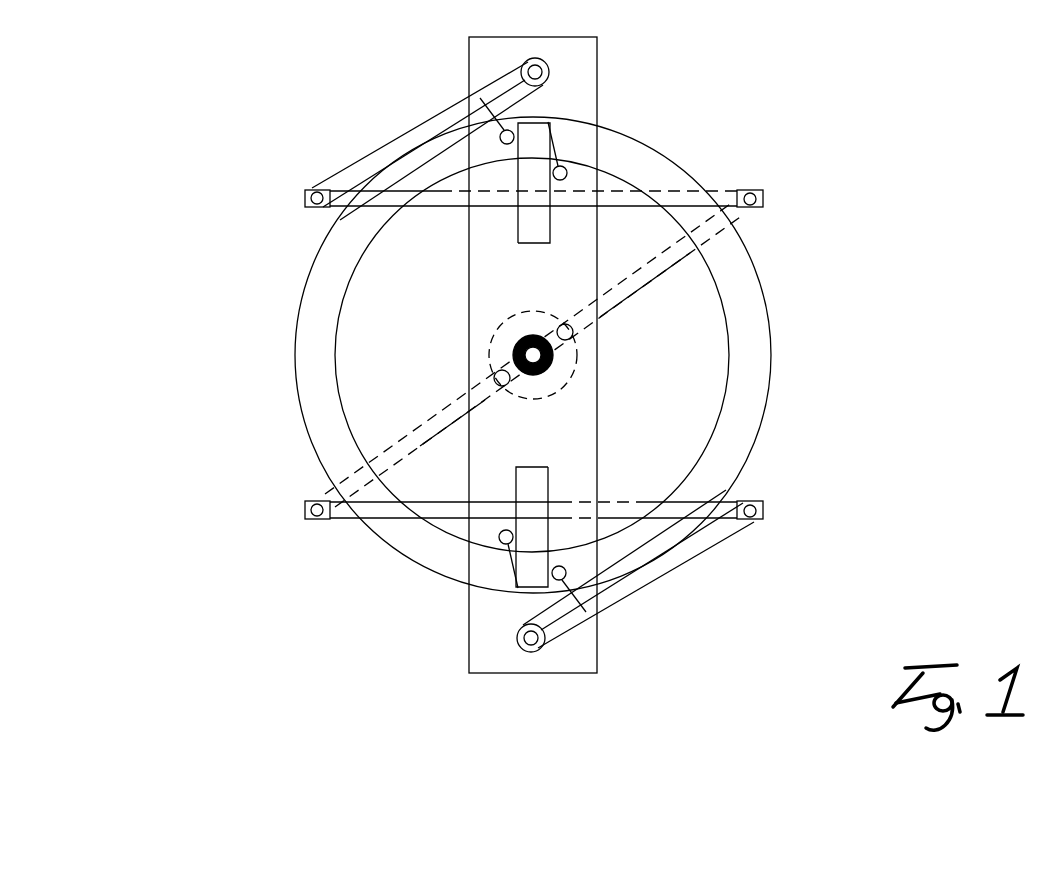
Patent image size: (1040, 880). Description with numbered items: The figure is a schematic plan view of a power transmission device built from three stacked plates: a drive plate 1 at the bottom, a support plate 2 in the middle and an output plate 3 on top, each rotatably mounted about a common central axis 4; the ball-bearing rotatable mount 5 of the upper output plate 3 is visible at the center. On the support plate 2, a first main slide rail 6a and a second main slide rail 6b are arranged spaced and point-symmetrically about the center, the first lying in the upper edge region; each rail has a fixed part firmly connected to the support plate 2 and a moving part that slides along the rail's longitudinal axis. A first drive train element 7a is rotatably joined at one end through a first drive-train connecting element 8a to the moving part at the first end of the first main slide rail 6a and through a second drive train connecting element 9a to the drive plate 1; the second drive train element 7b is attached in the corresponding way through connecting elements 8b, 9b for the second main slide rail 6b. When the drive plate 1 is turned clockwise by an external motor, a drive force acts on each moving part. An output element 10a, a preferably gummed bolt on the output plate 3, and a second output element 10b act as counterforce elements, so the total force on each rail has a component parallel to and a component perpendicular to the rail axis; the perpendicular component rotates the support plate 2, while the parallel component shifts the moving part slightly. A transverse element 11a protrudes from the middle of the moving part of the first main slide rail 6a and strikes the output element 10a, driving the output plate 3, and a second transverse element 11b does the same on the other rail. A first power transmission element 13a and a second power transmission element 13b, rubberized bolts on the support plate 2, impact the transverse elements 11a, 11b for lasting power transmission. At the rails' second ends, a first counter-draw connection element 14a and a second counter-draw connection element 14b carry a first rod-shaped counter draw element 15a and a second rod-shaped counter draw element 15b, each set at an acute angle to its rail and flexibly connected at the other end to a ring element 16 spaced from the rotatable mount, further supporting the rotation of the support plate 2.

The drive plate 1 is at (583, 80).
The support plate 2 is at (763, 287).
The output plate 3 is at (733, 343).
The central axis 4 is at (512, 367).
The rotatable mount 5 is at (512, 342).
The ring element 16 is at (512, 320).
The first main slide rail 6a is at (405, 233).
The second main slide rail 6b is at (470, 580).
The first drive train element 7a is at (425, 122).
The second drive train element 7b is at (613, 590).
The first drive-train connecting element 8a is at (308, 193).
The lower bar right pivot 8b is at (765, 503).
The second drive train connecting element 9a is at (548, 62).
The lower arm pin 9b is at (517, 636).
The output element 10a is at (502, 119).
The second output element 10b is at (490, 586).
The transverse element 11a is at (548, 119).
The second transverse element 11b is at (547, 585).
The first power transmission element 13a is at (485, 122).
The second power transmission element 13b is at (548, 556).
The first counter-draw connection element 14a is at (763, 195).
The second counter-draw connection element 14b is at (300, 500).
The first rod-shaped counter draw element 15a is at (612, 297).
The second rod-shaped counter draw element 15b is at (348, 470).